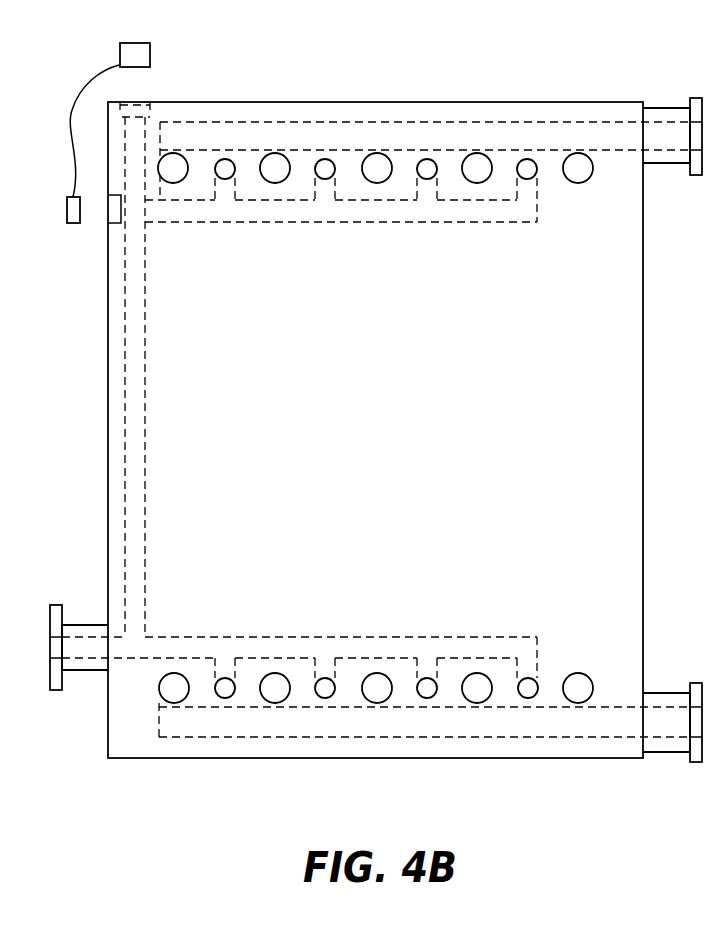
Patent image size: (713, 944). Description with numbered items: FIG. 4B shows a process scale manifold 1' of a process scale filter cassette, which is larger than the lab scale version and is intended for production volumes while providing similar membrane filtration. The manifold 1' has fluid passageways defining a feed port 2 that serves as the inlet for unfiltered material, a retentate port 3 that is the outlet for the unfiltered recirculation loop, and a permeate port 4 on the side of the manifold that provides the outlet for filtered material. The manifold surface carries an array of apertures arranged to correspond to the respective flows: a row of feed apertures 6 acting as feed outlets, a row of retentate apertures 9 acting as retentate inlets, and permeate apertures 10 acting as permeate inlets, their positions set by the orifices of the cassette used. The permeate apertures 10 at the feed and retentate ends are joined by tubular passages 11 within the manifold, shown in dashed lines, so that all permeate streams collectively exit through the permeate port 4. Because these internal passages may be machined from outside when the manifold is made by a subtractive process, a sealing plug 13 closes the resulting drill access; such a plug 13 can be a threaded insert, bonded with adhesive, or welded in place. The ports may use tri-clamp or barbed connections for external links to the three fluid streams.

The process scale manifold 1' is at (328, 430).
The feed port 2 is at (662, 692).
The retentate port 3 is at (662, 107).
The permeate port 4 is at (80, 625).
The feed apertures 6 is at (175, 703).
The retentate apertures 9 is at (177, 153).
The permeate apertures 10 is at (225, 158).
The tubular passages 11 is at (210, 222).
The sealing plug 13 is at (68, 108).